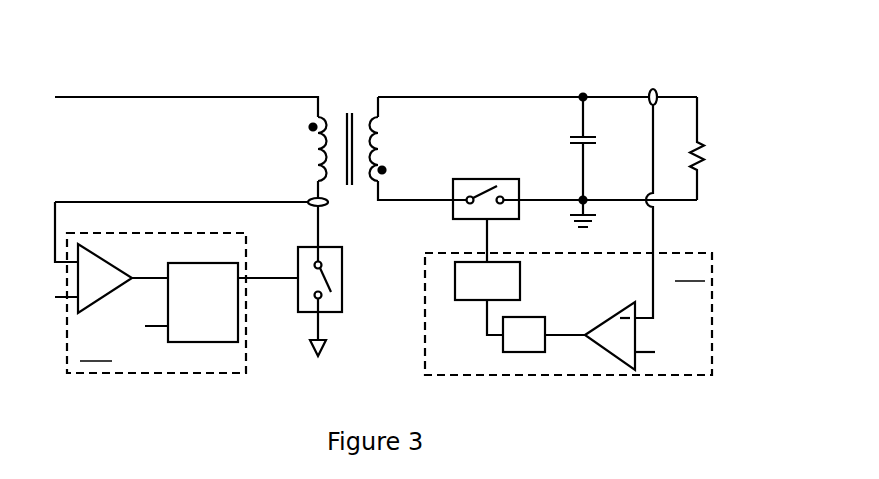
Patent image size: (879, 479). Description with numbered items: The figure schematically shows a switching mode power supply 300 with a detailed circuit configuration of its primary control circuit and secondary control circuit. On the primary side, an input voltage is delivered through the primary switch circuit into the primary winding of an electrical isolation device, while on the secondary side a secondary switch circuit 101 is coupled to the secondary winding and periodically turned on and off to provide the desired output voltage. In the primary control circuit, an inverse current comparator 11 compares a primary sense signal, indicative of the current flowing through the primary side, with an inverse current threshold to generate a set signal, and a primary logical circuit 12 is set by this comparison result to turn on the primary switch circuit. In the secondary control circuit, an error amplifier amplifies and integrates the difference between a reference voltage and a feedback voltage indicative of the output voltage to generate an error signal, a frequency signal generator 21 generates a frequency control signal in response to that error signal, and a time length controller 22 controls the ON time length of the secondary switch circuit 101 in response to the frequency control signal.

The switching mode power supply 300 is at (109, 79).
The inverse current comparator 11 is at (105, 278).
The primary logical circuit 12 is at (203, 302).
The secondary switch circuit 101 is at (466, 203).
The time length controller 22 is at (487, 281).
The frequency signal generator 21 is at (524, 334).